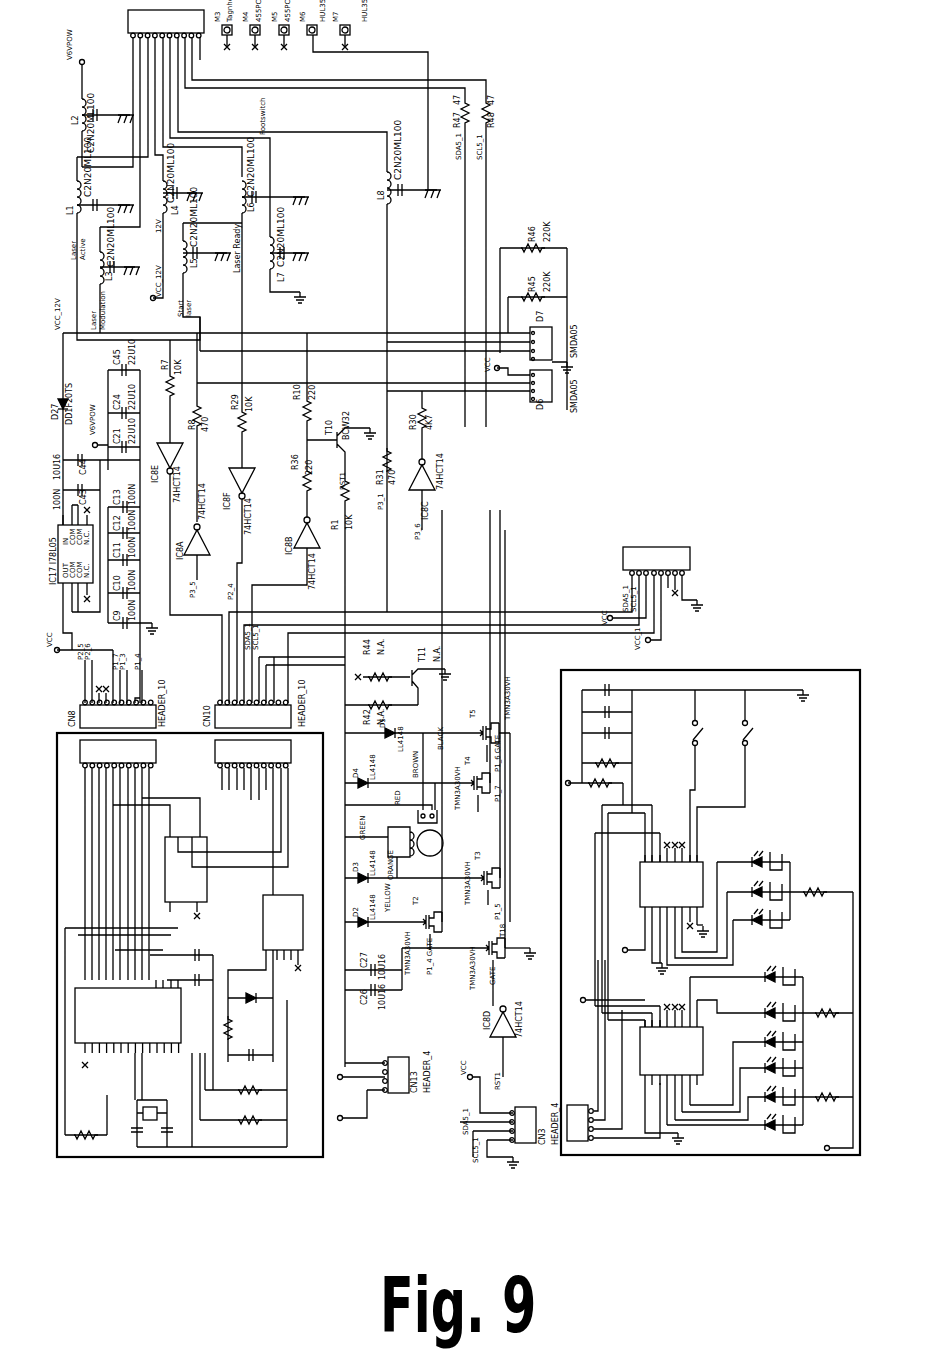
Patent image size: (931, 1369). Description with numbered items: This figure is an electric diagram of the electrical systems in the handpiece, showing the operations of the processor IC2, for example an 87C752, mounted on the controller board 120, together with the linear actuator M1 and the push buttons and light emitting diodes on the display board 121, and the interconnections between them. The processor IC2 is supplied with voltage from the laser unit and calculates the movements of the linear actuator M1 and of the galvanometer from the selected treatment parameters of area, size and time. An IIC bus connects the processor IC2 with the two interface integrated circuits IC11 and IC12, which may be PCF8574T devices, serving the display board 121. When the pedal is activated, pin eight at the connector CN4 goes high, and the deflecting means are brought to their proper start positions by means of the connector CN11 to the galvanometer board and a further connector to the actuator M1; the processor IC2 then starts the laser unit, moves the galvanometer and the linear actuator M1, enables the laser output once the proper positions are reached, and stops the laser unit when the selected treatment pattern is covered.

The controller board 120 is at (190, 978).
The display board 121 is at (722, 813).
The connector CN4 is at (281, 123).
The connector CN11 is at (657, 557).
The linear actuator M1 is at (430, 854).
The processor IC2 is at (133, 1020).
The interface integrated circuit IC12 is at (671, 886).
The interface integrated circuit IC11 is at (671, 1047).